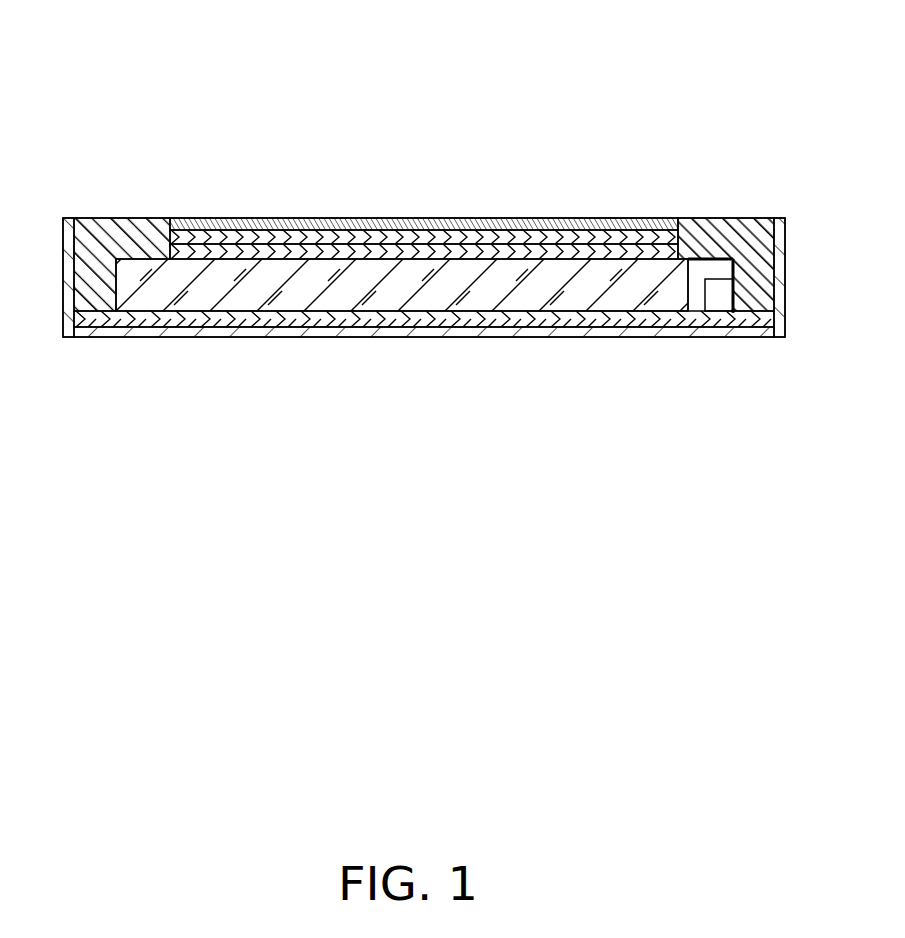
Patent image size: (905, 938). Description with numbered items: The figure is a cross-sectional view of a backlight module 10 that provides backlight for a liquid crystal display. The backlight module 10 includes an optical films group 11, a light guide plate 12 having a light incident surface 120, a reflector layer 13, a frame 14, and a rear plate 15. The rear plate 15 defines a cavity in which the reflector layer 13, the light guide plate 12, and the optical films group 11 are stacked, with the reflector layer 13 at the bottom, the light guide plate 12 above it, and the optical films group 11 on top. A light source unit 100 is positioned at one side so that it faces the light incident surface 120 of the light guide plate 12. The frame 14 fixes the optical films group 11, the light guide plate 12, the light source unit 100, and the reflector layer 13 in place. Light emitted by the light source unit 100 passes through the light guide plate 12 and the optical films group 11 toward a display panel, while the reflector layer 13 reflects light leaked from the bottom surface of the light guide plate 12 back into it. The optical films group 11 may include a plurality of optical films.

The backlight module 10 is at (376, 72).
The optical films group 11 is at (305, 230).
The light guide plate 12 is at (552, 285).
The reflector layer 13 is at (293, 320).
The frame 14 is at (121, 229).
The rear plate 15 is at (410, 330).
The light source unit 100 is at (720, 292).
The light incident surface 120 is at (689, 292).